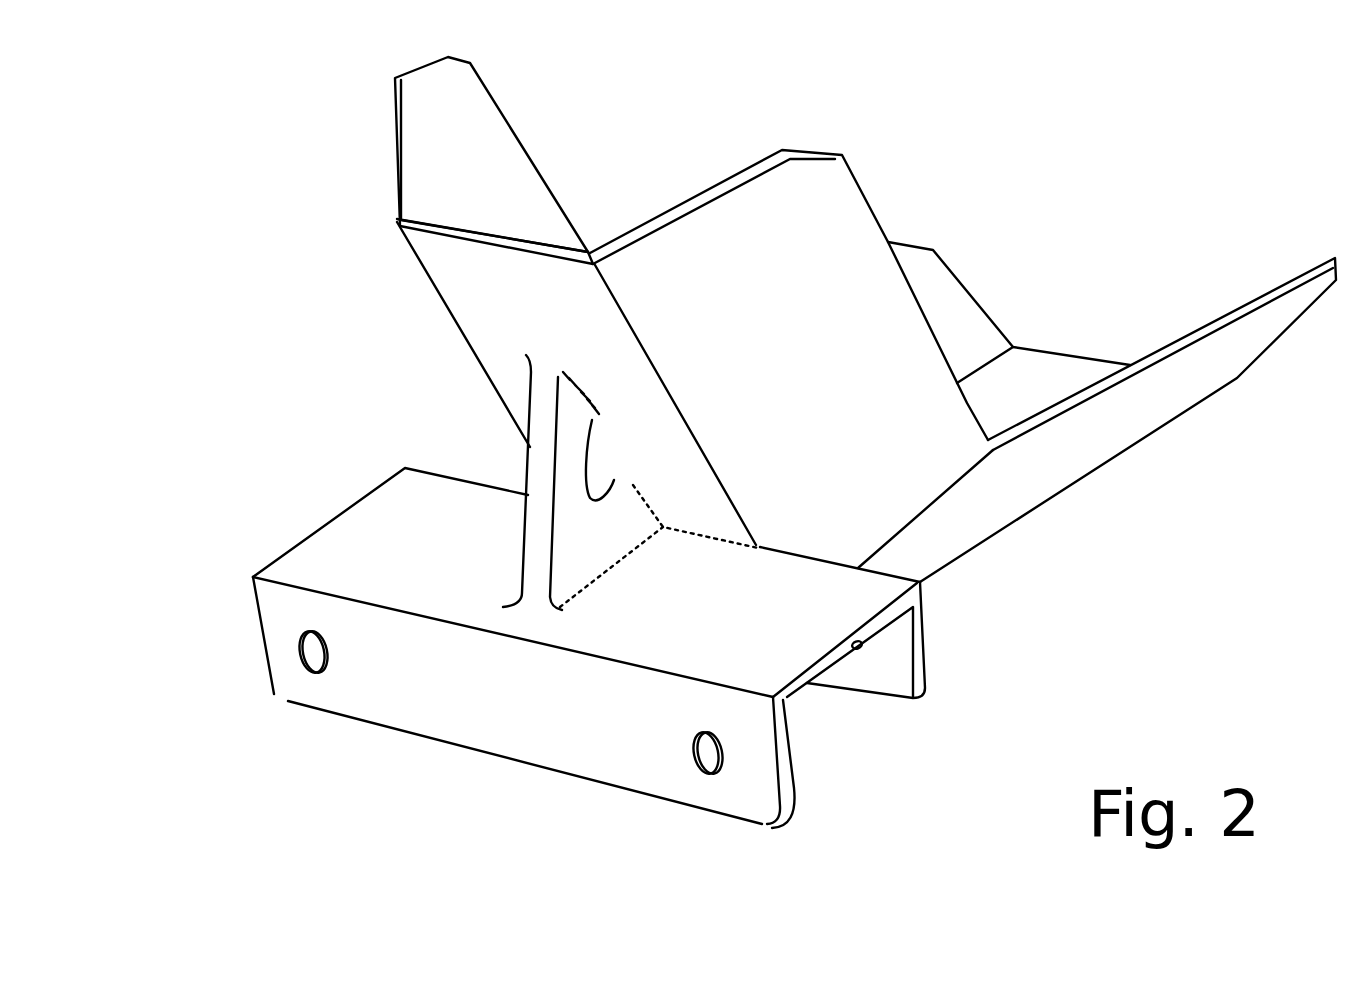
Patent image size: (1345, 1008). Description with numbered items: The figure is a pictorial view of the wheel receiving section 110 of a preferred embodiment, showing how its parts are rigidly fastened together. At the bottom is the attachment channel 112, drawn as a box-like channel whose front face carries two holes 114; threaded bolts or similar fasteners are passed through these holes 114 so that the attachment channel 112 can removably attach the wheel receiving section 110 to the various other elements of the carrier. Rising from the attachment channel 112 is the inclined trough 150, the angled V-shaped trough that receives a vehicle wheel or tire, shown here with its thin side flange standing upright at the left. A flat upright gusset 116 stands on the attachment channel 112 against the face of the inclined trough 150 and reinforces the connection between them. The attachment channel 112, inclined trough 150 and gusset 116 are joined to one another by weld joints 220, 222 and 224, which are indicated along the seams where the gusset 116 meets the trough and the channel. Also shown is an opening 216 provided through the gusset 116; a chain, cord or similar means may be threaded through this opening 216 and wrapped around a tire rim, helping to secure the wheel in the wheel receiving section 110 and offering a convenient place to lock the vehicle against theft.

The wheel receiving section 110 is at (978, 180).
The attachment channel 112 is at (318, 527).
The holes 114 is at (295, 658).
The gusset 116 is at (528, 470).
The inclined trough 150 is at (392, 128).
The opening 216 is at (597, 463).
The weld joint 220 is at (720, 535).
The weld joint 222 is at (610, 585).
The weld joint 224 is at (568, 383).